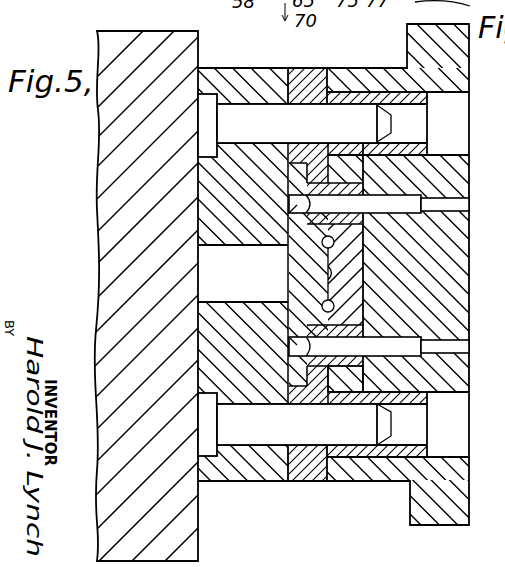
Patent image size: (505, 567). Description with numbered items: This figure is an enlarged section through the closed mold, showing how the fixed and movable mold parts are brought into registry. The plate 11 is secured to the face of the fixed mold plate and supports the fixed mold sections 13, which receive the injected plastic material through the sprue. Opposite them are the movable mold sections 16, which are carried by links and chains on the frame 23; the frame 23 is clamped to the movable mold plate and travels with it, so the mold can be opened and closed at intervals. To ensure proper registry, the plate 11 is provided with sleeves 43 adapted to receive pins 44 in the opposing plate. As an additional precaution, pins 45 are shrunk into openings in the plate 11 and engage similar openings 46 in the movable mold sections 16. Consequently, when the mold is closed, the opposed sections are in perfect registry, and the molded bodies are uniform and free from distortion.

The plate 11 is at (463, 297).
The fixed mold sections 13 is at (349, 359).
The movable mold sections 16 is at (299, 278).
The frame 23 is at (190, 510).
The sleeves 43 is at (372, 497).
The pins 44 is at (248, 110).
The pins 45 is at (415, 205).
The openings 46 is at (289, 345).